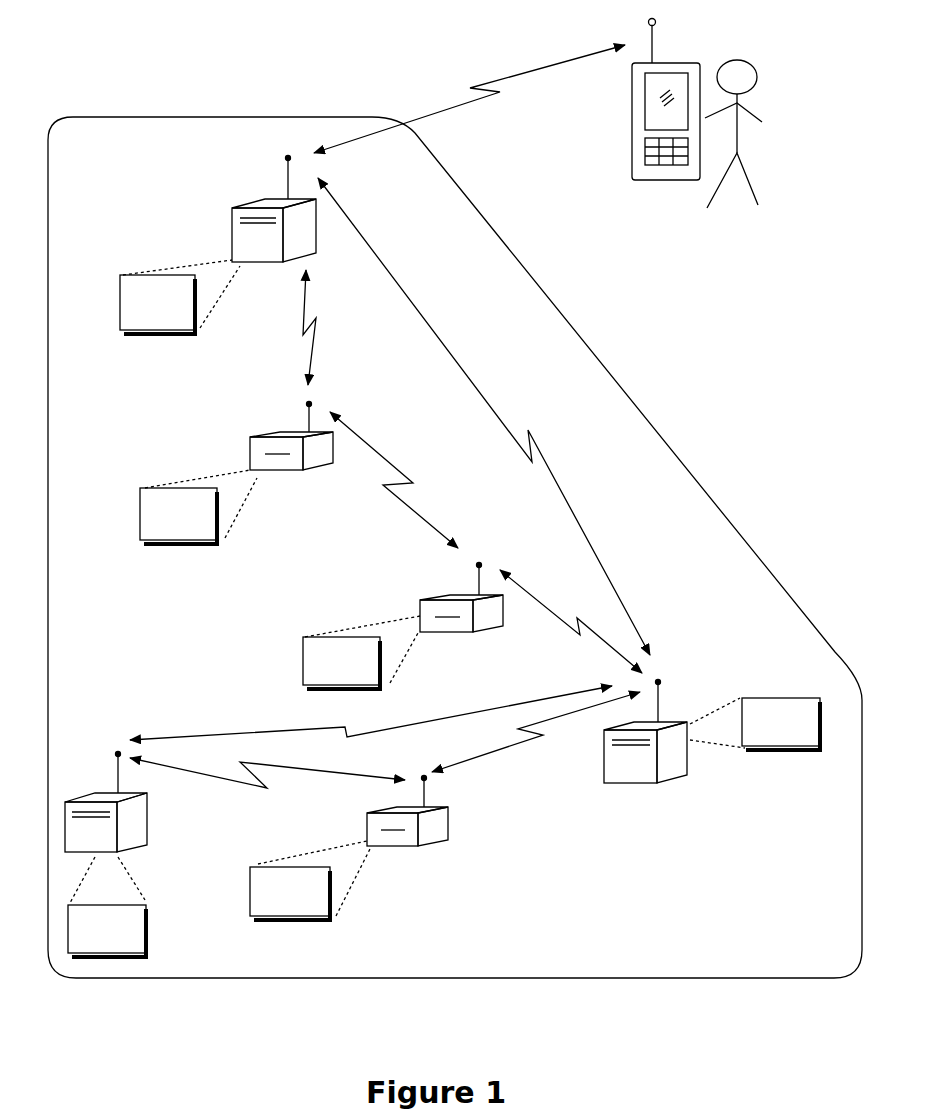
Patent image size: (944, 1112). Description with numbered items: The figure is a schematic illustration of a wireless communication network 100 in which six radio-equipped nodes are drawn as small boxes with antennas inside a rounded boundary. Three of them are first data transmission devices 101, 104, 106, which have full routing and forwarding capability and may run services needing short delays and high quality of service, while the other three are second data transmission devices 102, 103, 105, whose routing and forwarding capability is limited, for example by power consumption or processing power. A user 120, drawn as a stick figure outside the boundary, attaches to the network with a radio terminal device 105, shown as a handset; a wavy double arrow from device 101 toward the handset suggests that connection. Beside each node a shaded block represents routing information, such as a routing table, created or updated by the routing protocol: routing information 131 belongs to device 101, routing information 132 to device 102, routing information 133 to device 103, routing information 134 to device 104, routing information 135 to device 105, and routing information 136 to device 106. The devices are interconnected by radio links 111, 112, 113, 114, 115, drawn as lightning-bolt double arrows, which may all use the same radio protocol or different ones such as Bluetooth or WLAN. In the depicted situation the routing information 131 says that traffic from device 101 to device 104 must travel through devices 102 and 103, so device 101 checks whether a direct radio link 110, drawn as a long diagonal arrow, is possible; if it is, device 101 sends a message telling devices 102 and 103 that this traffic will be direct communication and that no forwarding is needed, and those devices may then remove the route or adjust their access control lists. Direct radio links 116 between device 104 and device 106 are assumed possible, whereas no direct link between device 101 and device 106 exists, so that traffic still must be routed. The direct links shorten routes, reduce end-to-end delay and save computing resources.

The wireless communication network 100 is at (197, 117).
The first data transmission device 101 is at (232, 225).
The second data transmission device 102 is at (250, 462).
The second data transmission device 103 is at (420, 612).
The first data transmission device 104 is at (650, 786).
The radio terminal device 105 is at (367, 838).
The first data transmission device 106 is at (82, 790).
The direct radio link 110 is at (451, 352).
The radio link 111 is at (305, 322).
The radio link 112 is at (393, 498).
The radio link 113 is at (560, 620).
The radio link 114 is at (508, 752).
The radio link 115 is at (195, 773).
The direct radio links 116 is at (208, 735).
The user 120 is at (748, 62).
The routing information 131 is at (180, 297).
The routing information 132 is at (198, 507).
The routing information 133 is at (361, 652).
The routing information 134 is at (755, 724).
The routing information 135 is at (310, 880).
The routing information 136 is at (107, 907).